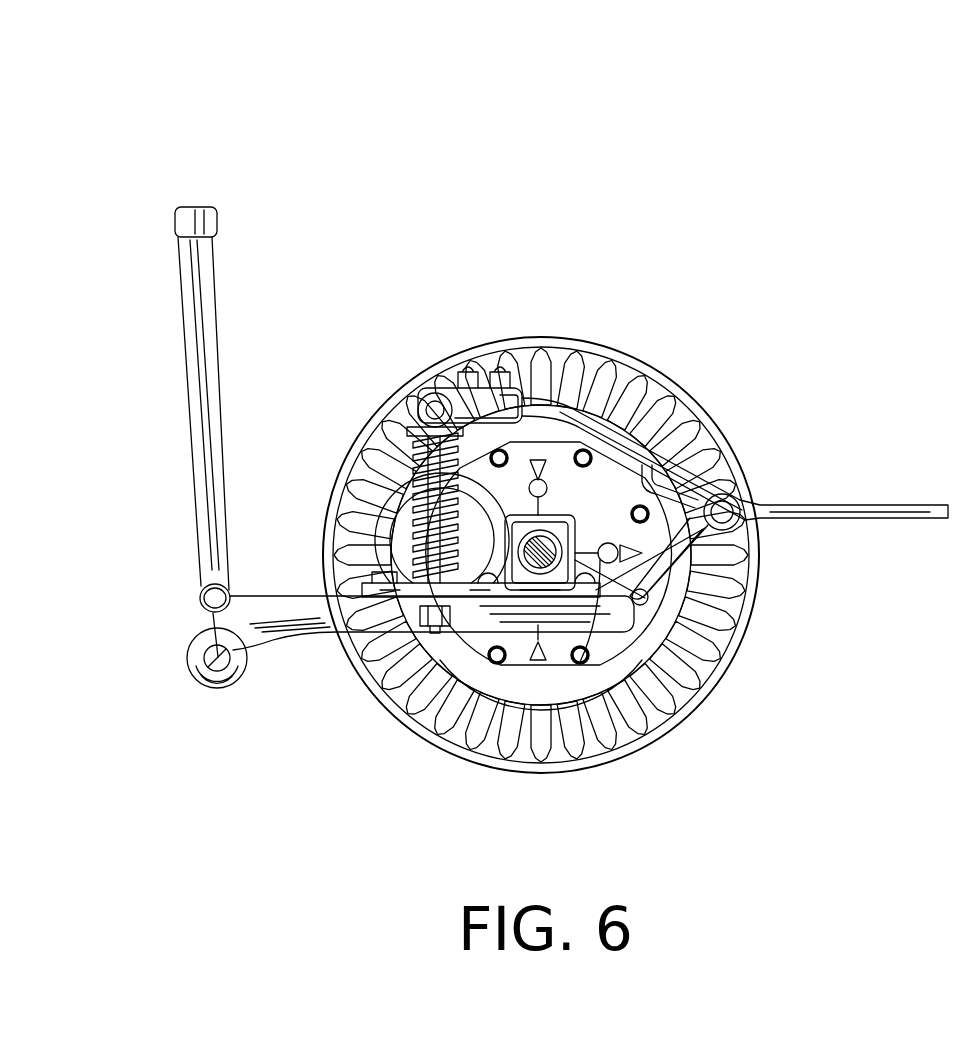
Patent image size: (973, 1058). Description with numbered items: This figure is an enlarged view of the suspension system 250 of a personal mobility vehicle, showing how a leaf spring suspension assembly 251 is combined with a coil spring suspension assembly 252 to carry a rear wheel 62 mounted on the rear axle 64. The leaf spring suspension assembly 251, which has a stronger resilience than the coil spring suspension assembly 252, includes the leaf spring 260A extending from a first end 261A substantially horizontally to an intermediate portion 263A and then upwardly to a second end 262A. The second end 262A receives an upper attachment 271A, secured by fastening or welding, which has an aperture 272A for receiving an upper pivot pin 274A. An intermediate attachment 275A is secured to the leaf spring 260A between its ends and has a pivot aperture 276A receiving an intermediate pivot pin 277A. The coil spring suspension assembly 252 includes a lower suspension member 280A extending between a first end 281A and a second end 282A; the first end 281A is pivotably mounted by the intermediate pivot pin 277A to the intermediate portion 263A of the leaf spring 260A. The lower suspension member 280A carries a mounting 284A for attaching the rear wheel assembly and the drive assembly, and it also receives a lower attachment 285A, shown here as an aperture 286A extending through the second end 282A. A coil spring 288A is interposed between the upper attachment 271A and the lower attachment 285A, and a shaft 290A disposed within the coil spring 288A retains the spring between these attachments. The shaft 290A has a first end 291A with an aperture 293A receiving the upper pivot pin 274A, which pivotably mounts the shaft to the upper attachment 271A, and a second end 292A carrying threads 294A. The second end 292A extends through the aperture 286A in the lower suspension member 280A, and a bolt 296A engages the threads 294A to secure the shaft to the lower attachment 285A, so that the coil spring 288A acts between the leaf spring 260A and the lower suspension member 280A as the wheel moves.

The suspension system 250 is at (710, 154).
The leaf spring suspension assembly 251 is at (680, 440).
The coil spring suspension assembly 252 is at (665, 680).
The rear axle 64 is at (742, 640).
The rear wheel 62 is at (592, 597).
The leaf spring 260A is at (585, 420).
The first end of leaf spring 261A is at (943, 500).
The second end of leaf spring 262A is at (515, 398).
The intermediate portion of leaf spring 263A is at (808, 503).
The upper attachment 271A is at (468, 400).
The aperture 272A is at (427, 403).
The upper pivot pin 274A is at (428, 395).
The intermediate attachment 275A is at (688, 490).
The pivot aperture 276A is at (745, 522).
The intermediate pivot pin 277A is at (705, 548).
The lower suspension member 280A is at (530, 593).
The first end of lower suspension member 281A is at (745, 605).
The second end of lower suspension member 282A is at (345, 630).
The mounting 284A is at (580, 595).
The lower attachment 285A is at (462, 632).
The aperture 286A is at (530, 590).
The coil spring 288A is at (400, 440).
The shaft 290A is at (385, 515).
The first end of shaft 291A is at (380, 470).
The second end of shaft 292A is at (345, 588).
The aperture 293A is at (420, 410).
The threads 294A is at (433, 633).
The bolt 296A is at (437, 633).